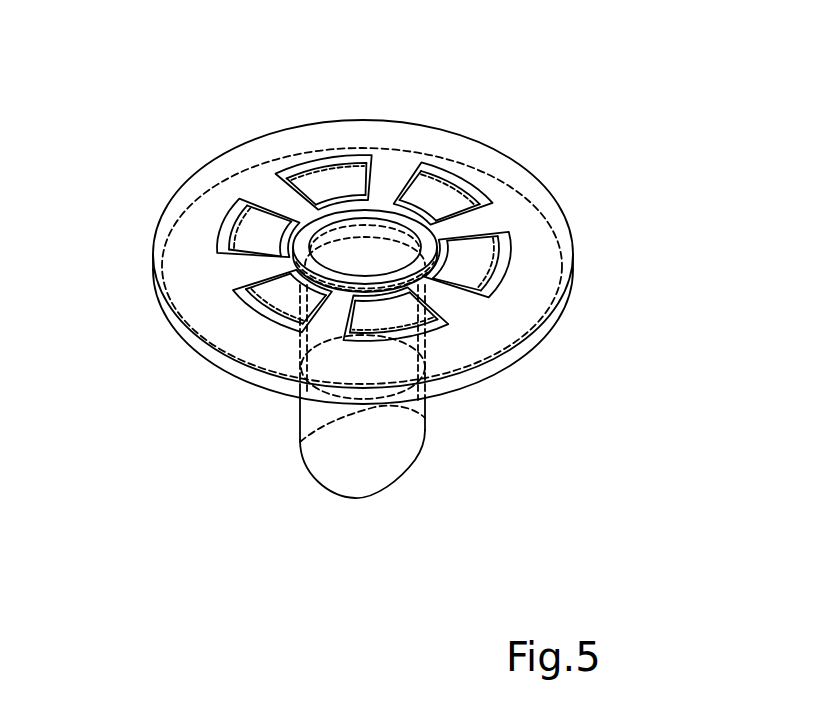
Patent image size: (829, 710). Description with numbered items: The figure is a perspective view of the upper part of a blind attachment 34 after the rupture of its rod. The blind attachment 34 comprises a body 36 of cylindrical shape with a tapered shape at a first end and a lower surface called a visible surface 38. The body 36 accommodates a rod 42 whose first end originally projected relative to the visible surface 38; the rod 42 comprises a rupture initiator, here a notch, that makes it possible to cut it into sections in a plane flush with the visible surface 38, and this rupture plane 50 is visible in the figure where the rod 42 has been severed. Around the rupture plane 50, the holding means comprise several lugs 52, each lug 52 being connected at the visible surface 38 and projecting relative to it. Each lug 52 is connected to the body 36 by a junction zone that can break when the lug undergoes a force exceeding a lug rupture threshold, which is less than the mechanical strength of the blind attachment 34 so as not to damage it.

The blind attachment 34 is at (361, 257).
The body 36 is at (410, 432).
The visible surface 38 is at (243, 175).
The rod 42 is at (352, 183).
The rupture plane 50 is at (390, 252).
The lug 52 is at (365, 245).